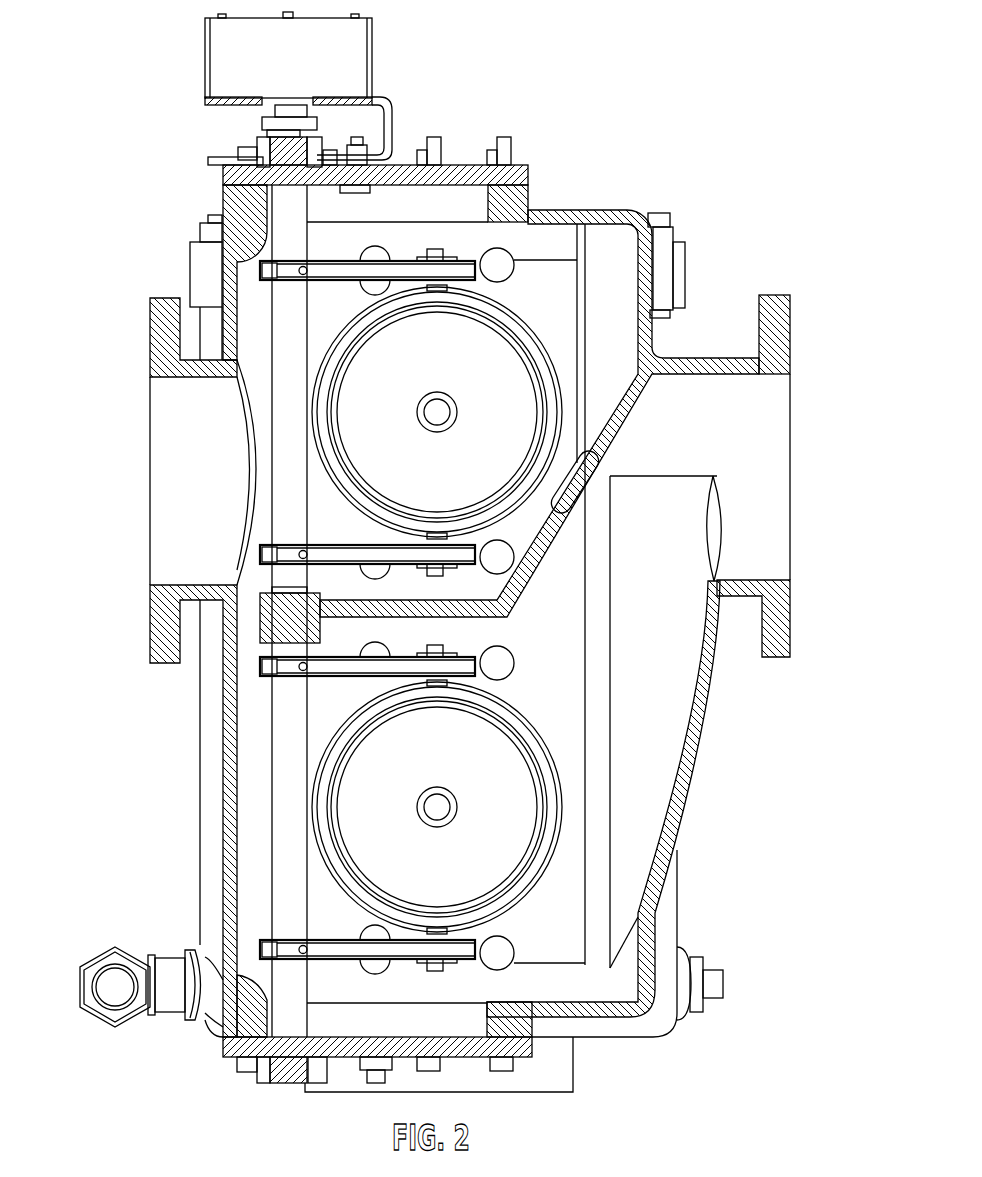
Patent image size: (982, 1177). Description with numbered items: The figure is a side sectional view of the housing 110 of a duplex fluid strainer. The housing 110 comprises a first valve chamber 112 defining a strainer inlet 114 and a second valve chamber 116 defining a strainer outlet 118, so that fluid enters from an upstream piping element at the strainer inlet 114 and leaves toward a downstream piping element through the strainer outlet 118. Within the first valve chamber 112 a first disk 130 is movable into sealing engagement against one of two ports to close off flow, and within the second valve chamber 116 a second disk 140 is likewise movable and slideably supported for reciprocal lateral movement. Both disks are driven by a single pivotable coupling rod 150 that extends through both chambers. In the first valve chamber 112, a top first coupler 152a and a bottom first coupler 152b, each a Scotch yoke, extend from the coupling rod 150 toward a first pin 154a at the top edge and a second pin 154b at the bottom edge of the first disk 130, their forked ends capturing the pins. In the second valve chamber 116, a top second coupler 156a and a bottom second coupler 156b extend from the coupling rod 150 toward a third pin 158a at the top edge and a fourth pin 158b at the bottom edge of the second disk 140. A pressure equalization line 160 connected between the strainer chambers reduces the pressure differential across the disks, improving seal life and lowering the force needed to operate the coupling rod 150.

The housing 110 is at (765, 219).
The first valve chamber 112 is at (566, 278).
The strainer inlet 114 is at (136, 490).
The second valve chamber 116 is at (652, 803).
The strainer outlet 118 is at (761, 461).
The first disk 130 is at (355, 405).
The second disk 140 is at (355, 806).
The coupling rod 150 is at (285, 726).
The top first coupler 152a is at (262, 268).
The bottom first coupler 152b is at (262, 552).
The first pin 154a is at (447, 257).
The second pin 154b is at (455, 573).
The top second coupler 156a is at (262, 664).
The bottom second coupler 156b is at (262, 945).
The third pin 158a is at (447, 642).
The fourth pin 158b is at (432, 968).
The pressure equalization line 160 is at (100, 950).